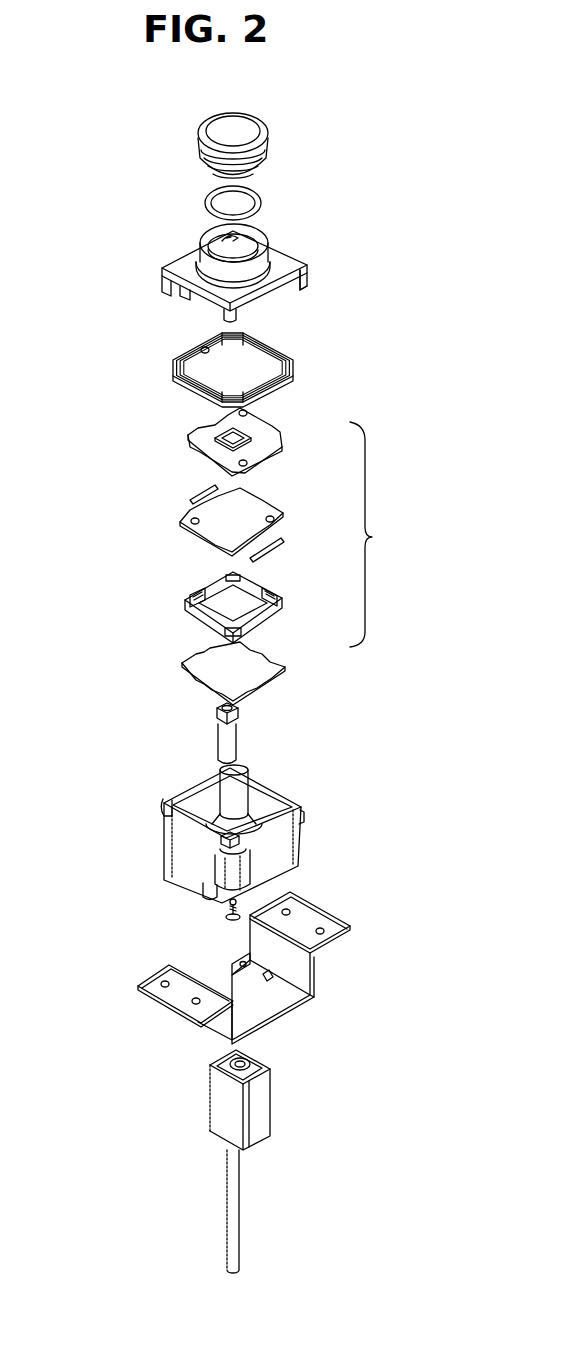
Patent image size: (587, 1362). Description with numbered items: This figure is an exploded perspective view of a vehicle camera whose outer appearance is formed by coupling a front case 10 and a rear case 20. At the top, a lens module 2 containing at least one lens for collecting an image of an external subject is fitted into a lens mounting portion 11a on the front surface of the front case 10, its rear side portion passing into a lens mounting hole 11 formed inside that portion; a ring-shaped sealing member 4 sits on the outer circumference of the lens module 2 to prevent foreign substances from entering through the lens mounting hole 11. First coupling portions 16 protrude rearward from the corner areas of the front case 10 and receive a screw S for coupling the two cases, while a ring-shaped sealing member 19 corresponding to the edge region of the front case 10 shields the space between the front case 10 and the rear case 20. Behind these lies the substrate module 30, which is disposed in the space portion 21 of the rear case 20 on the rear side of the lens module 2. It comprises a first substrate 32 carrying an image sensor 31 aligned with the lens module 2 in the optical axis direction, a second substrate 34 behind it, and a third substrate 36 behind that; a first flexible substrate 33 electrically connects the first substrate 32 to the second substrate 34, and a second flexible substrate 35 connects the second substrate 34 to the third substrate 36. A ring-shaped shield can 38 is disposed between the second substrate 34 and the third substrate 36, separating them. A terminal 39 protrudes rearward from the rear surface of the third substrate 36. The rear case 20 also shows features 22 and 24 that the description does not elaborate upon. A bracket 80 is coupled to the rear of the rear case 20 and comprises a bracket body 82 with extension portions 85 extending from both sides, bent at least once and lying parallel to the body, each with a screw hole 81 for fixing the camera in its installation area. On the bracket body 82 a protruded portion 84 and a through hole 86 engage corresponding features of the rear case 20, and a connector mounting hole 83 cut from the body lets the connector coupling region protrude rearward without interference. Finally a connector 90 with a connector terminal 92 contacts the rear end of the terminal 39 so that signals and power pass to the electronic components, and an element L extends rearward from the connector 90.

The lens module 2 is at (205, 142).
The sealing member 4 is at (210, 200).
The front case 10 is at (250, 253).
The lens mounting hole 11 is at (213, 238).
The lens mounting portion 11a is at (262, 245).
The first coupling portion 16 is at (310, 288).
The gasket 19 is at (178, 354).
The substrate module 30 is at (290, 556).
The image sensor 31 is at (262, 433).
The first substrate 32 is at (264, 442).
The first flexible substrate 33 is at (230, 483).
The second substrate 34 is at (280, 522).
The second flexible substrate 35 is at (280, 547).
The shield can 38 is at (280, 600).
The third substrate 36 is at (272, 665).
The terminal 39 is at (225, 745).
The rear case 20 is at (226, 822).
The space portion 21 is at (245, 800).
The locking lug 22 is at (162, 806).
The boss 24 is at (222, 850).
The screw S is at (238, 905).
The bracket 80 is at (237, 961).
The screw hole 81 is at (290, 910).
The bracket body 82 is at (285, 1020).
The connector mounting hole 83 is at (236, 990).
The protruded portion 84 is at (275, 975).
The extension portion 85 is at (148, 1000).
The through hole 86 is at (245, 960).
The connector 90 is at (248, 1100).
The connector terminal 92 is at (232, 1060).
The lead wire L is at (236, 1188).